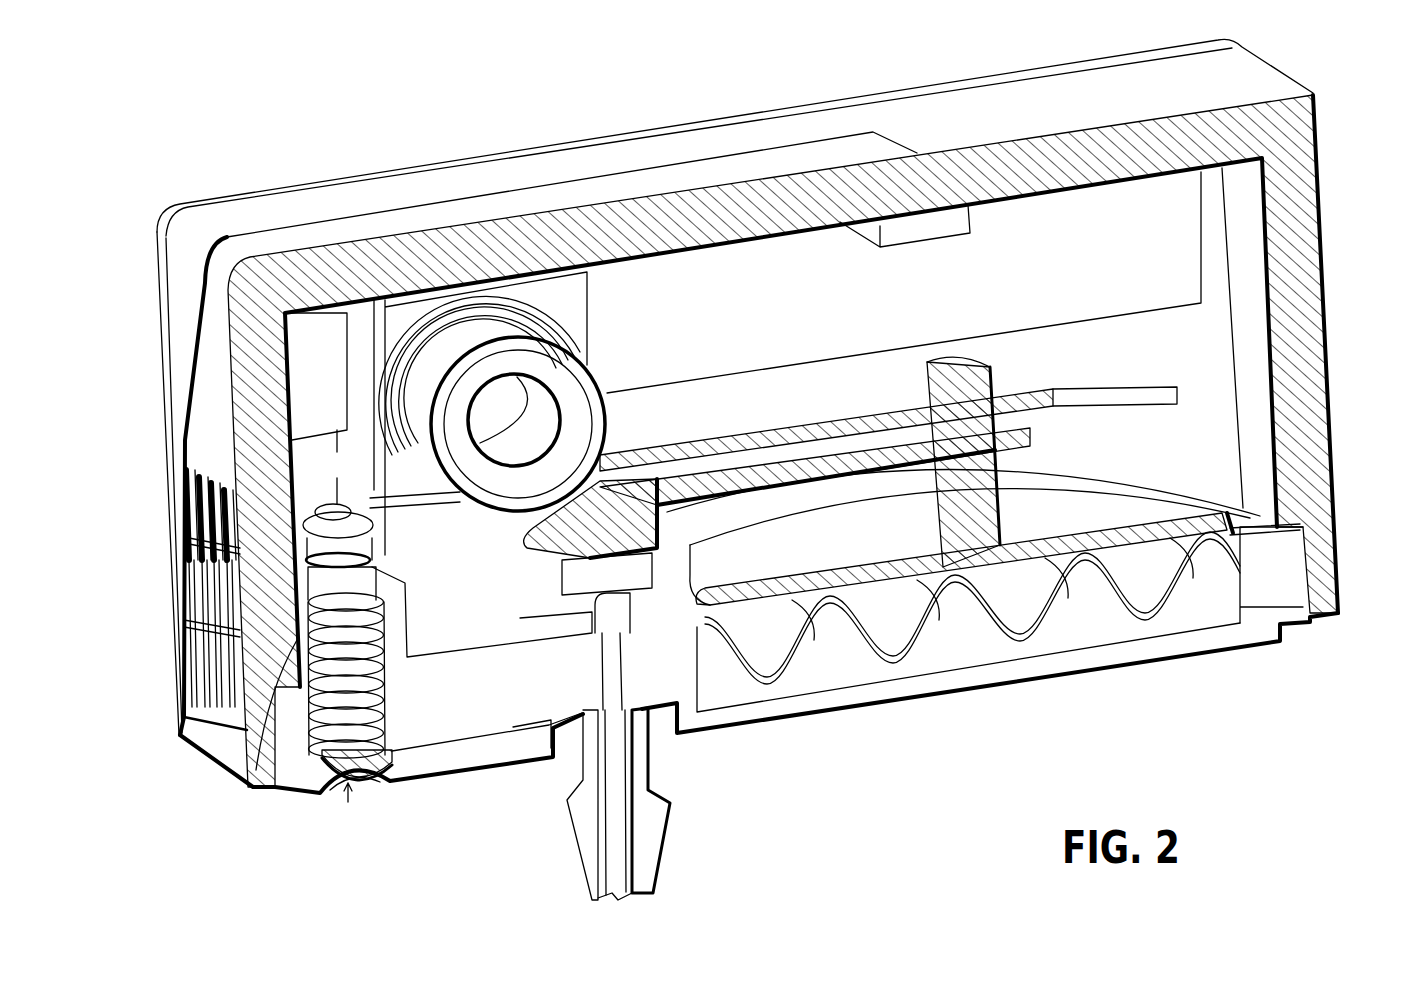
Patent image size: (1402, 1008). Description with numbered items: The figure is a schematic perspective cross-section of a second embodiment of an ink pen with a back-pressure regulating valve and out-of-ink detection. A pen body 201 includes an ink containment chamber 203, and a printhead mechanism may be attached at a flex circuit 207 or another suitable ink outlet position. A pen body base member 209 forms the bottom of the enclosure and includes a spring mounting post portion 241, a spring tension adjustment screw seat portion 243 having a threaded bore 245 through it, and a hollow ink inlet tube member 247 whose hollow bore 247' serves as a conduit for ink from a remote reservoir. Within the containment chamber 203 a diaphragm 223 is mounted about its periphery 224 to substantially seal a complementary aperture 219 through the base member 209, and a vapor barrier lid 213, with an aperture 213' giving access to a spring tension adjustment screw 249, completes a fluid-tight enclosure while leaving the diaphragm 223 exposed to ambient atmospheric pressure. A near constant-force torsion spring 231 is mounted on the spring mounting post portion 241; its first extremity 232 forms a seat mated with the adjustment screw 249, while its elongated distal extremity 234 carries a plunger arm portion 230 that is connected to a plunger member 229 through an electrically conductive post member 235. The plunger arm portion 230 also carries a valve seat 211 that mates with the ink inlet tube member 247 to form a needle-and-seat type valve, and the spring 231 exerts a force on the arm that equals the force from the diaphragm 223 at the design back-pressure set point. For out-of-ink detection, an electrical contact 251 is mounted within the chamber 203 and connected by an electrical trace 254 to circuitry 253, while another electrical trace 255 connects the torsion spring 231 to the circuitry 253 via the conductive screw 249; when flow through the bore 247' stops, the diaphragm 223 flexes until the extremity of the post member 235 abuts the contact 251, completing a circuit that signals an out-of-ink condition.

The pen body 201 is at (1335, 380).
The ink containment chamber 203 is at (1210, 327).
The flex circuit 207 is at (188, 528).
The pen body base member 209 is at (493, 700).
The valve seat 211 is at (560, 582).
The vapor barrier lid 213 is at (806, 692).
The aperture 213' is at (394, 819).
The aperture 219 is at (1243, 590).
The diaphragm 223 is at (1020, 607).
The periphery 224 is at (1243, 507).
The plunger member 229 is at (1172, 517).
The plunger arm portion 230 is at (1063, 443).
The torsion spring 231 is at (475, 330).
The first extremity 232 is at (303, 487).
The distal extremity 234 is at (1100, 395).
The electrically conductive post member 235 is at (945, 355).
The spring mounting post portion 241 is at (528, 290).
The spring tension adjustment screw seat portion 243 is at (257, 785).
The threaded bore 245 is at (347, 773).
The hollow ink inlet tube member 247 is at (649, 804).
The hollow bore 247' is at (660, 826).
The spring tension adjustment screw 249 is at (330, 798).
The electrical contact 251 is at (947, 220).
The circuitry 253 is at (190, 497).
The electrical trace 254 is at (716, 157).
The electrical trace 255 is at (246, 771).